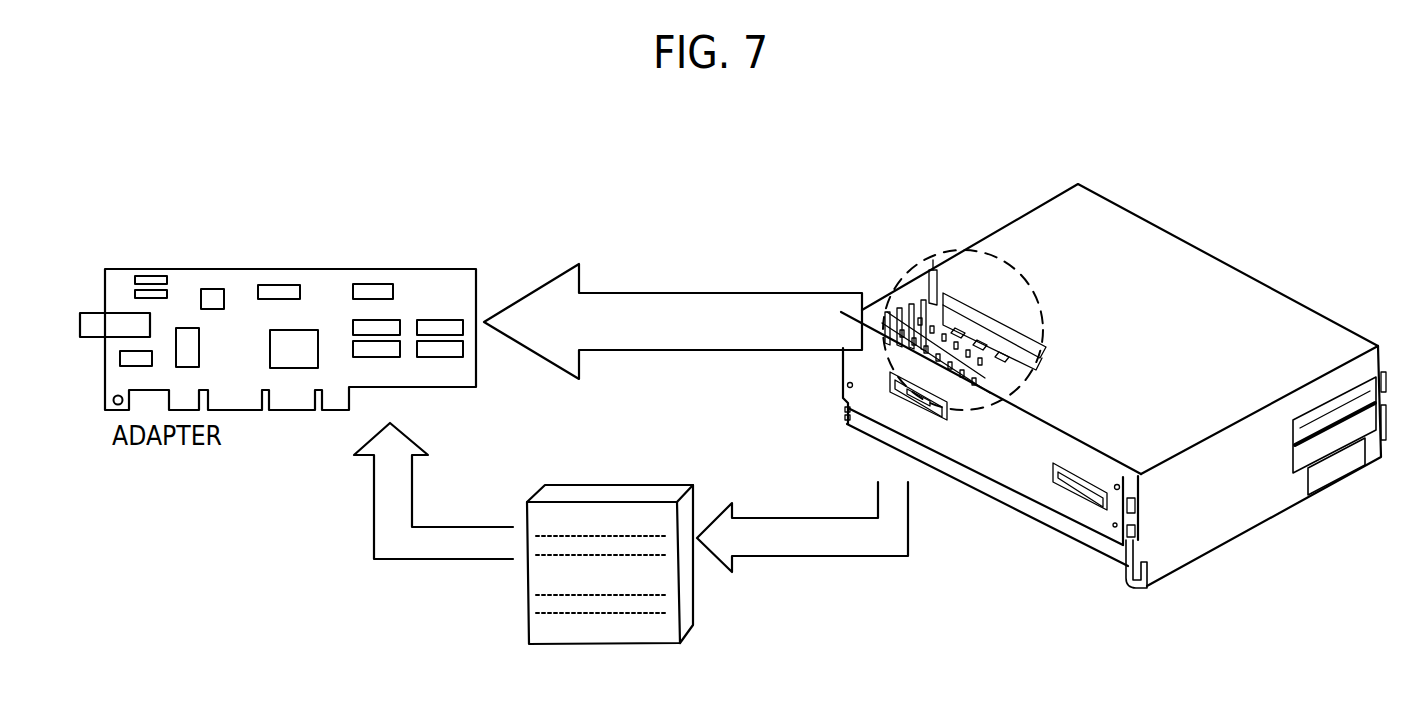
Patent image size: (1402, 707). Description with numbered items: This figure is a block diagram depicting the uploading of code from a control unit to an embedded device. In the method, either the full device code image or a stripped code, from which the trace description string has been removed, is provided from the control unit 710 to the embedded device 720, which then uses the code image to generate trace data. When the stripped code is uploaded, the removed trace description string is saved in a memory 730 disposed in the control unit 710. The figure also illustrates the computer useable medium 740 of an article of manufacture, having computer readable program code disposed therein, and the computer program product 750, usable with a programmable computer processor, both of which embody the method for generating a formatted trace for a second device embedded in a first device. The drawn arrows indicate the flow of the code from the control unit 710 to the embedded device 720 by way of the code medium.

The control unit 710 is at (1183, 579).
The embedded device 720 is at (332, 288).
The memory 730 is at (937, 305).
The computer useable medium 740 is at (915, 315).
The computer program product 750 is at (983, 332).